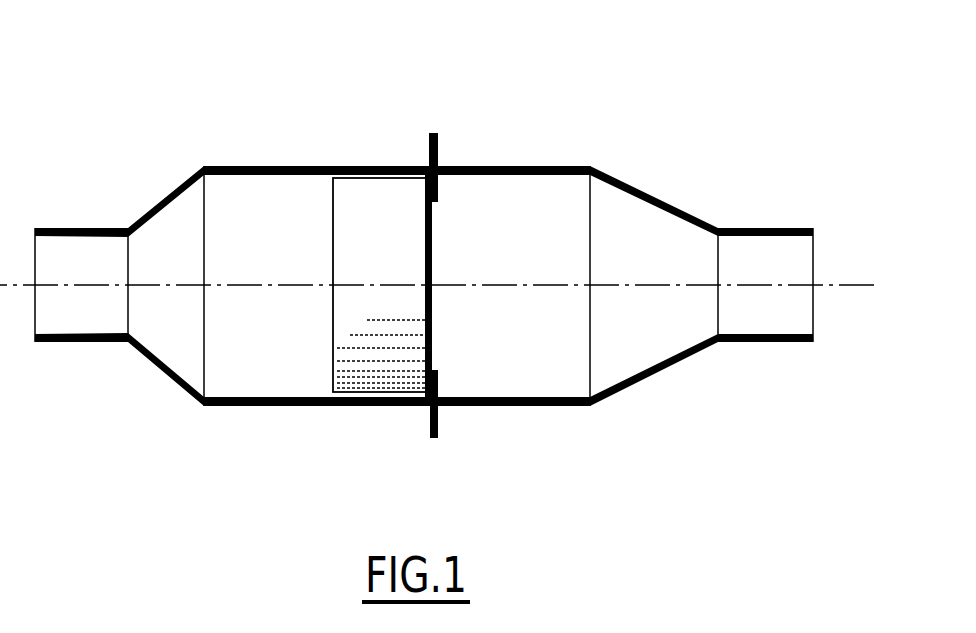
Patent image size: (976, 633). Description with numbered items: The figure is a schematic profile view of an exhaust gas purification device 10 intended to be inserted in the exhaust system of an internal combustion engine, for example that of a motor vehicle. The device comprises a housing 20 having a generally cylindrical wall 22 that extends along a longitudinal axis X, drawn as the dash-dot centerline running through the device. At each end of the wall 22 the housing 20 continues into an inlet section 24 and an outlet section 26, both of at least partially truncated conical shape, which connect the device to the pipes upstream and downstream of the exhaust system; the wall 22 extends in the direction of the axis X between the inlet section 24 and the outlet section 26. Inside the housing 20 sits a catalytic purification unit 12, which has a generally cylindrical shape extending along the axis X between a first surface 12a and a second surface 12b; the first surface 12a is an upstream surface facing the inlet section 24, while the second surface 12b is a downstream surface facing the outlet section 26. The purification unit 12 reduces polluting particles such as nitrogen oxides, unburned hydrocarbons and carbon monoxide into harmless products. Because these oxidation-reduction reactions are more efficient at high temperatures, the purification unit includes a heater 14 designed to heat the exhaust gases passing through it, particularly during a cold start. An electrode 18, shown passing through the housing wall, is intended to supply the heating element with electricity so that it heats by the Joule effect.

The exhaust gas purification device 10 is at (109, 152).
The catalytic purification unit 12 is at (384, 244).
The first surface 12a is at (433, 333).
The second surface 12b is at (333, 333).
The heater 14 is at (444, 252).
The electrode 18 is at (438, 420).
The housing 20 is at (254, 160).
The cylindrical wall 22 is at (244, 407).
The inlet section 24 is at (641, 378).
The outlet section 26 is at (148, 360).
The longitudinal axis X is at (858, 278).